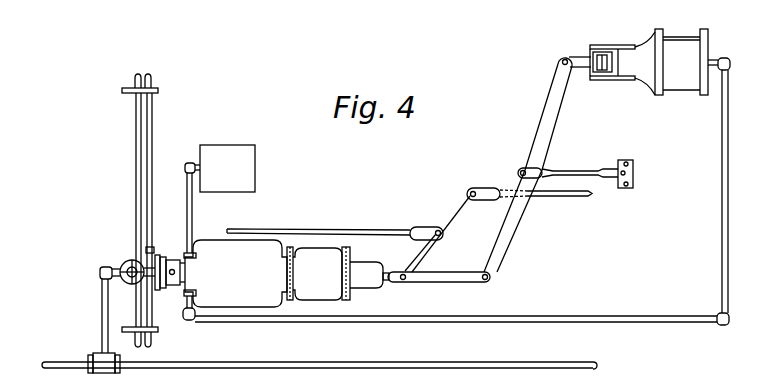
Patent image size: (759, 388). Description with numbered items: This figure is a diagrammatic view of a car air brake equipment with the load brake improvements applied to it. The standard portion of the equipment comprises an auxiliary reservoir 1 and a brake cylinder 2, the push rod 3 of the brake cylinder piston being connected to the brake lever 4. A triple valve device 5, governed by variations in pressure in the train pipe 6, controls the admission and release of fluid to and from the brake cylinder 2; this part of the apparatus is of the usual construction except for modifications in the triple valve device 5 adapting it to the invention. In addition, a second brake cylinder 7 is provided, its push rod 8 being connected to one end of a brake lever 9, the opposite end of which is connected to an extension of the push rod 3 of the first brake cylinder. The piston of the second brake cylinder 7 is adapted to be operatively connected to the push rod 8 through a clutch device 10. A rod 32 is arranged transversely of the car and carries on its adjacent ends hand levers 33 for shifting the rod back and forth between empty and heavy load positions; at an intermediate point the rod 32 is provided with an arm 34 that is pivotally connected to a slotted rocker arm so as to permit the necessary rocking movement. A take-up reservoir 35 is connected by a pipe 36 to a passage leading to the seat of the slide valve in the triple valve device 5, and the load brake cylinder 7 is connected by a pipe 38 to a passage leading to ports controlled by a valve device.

The auxiliary reservoir 1 is at (212, 246).
The brake cylinder 2 is at (320, 258).
The push rod 3 is at (386, 280).
The brake lever 4 is at (453, 212).
The triple valve device 5 is at (168, 256).
The train pipe 6 is at (222, 364).
The second brake cylinder 7 is at (677, 80).
The push rod 8 is at (576, 68).
The brake lever 9 is at (538, 136).
The clutch device 10 is at (593, 49).
The rod 32 is at (136, 163).
The hand levers 33 is at (137, 84).
The arm 34 is at (134, 281).
The take-up reservoir 35 is at (245, 168).
The pipe 36 is at (192, 210).
The pipe 38 is at (435, 318).